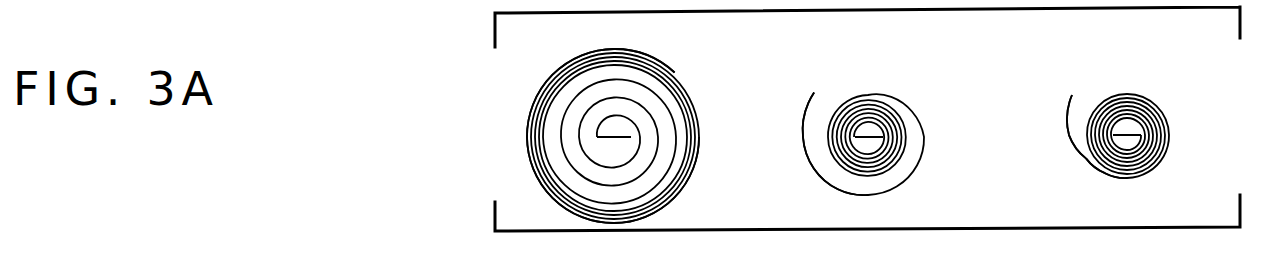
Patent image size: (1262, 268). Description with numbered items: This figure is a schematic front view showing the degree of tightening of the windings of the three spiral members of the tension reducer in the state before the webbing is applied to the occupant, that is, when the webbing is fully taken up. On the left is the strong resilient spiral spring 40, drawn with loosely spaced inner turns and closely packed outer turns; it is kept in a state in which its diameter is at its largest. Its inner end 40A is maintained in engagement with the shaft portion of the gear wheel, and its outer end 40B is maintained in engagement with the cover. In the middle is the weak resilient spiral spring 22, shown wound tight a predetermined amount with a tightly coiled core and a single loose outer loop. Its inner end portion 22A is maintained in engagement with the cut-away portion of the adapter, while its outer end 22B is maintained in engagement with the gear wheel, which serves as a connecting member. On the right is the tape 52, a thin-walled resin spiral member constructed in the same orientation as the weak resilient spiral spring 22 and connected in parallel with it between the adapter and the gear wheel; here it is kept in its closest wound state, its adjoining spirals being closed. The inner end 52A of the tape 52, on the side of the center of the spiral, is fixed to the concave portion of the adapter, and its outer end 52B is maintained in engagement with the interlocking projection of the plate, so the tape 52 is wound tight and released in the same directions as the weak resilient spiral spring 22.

The strong resilient spiral spring 40 is at (552, 80).
The inner end of strong resilient spiral spring 40A is at (610, 137).
The outer end of strong resilient spiral spring 40B is at (673, 73).
The weak resilient spiral spring 22 is at (918, 113).
The inner end portion of weak resilient spiral spring 22A is at (870, 137).
The outer end of weak resilient spiral spring 22B is at (813, 91).
The tape 52 is at (1165, 118).
The inner end of tape 52A is at (1128, 134).
The outer end of tape 52B is at (1072, 93).